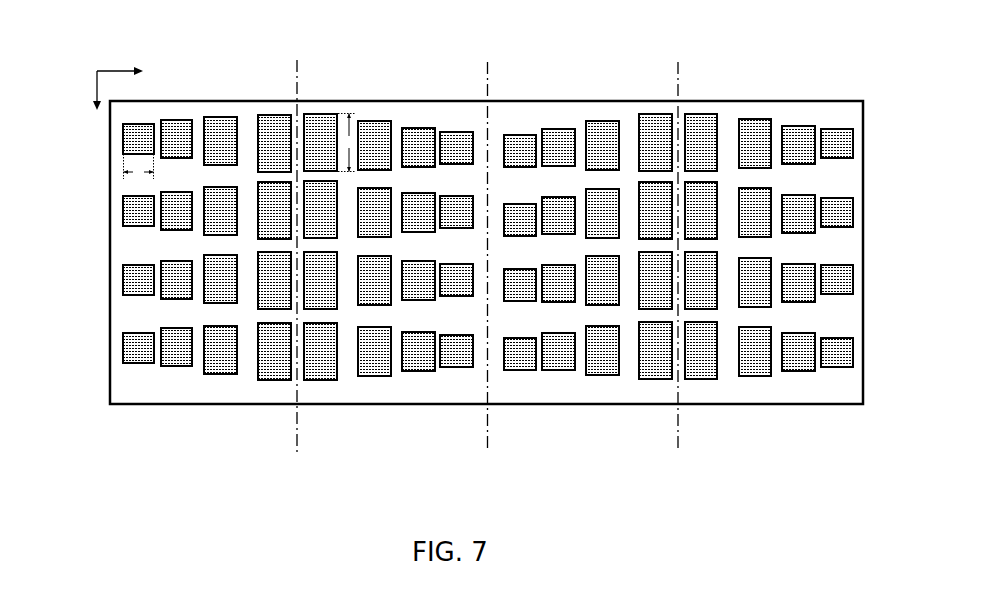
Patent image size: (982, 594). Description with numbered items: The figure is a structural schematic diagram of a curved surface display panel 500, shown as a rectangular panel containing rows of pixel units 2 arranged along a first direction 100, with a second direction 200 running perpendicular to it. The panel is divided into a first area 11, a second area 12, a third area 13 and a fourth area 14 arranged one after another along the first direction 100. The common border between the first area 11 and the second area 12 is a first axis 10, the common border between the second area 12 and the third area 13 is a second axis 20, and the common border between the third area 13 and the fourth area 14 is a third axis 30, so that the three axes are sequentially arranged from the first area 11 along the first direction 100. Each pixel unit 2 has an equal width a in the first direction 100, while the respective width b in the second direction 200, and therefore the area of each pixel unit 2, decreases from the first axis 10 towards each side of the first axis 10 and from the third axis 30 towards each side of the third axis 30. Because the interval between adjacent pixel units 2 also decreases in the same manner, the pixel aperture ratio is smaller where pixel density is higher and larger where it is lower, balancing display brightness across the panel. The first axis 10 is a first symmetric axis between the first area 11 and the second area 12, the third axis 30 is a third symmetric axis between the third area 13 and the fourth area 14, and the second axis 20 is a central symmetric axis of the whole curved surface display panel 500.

The curved surface display panel 500 is at (850, 54).
The first direction 100 is at (121, 58).
The second direction 200 is at (72, 90).
The pixel unit 2 is at (220, 142).
The first axis 10 is at (305, 242).
The second axis 20 is at (484, 243).
The third axis 30 is at (674, 243).
The first area 11 is at (207, 256).
The second area 12 is at (345, 395).
The third area 13 is at (578, 397).
The fourth area 14 is at (778, 398).